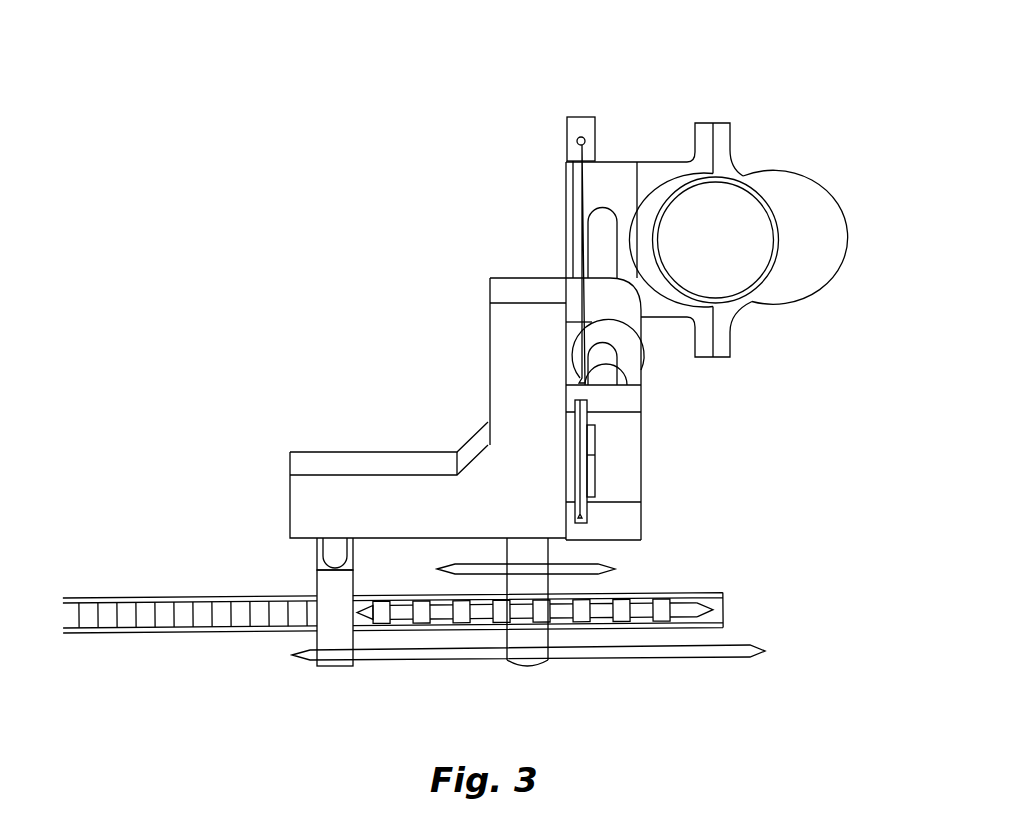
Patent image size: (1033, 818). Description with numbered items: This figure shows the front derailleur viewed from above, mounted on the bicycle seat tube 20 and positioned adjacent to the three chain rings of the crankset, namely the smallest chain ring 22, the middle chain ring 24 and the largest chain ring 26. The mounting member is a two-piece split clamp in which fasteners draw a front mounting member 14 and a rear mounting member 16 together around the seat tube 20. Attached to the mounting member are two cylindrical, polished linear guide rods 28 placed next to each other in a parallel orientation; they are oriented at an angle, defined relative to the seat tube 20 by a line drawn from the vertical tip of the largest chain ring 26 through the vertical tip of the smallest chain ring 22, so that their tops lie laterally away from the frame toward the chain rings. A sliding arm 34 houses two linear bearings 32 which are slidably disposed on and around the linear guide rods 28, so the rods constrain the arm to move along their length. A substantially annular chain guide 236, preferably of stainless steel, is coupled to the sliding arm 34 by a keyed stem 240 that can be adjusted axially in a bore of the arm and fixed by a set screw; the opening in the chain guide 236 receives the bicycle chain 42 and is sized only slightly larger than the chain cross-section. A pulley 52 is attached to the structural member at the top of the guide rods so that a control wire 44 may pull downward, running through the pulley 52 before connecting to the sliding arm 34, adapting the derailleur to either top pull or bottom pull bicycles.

The front mounting member 14 is at (720, 137).
The rear mounting member 16 is at (668, 172).
The seat tube 20 is at (765, 203).
The smallest chain ring 22 is at (610, 568).
The chain ring 24 is at (720, 611).
The largest chain ring 26 is at (680, 657).
The linear guide rods 28 is at (598, 233).
The linear bearings 32 is at (623, 357).
The sliding arm 34 is at (634, 325).
The bicycle chain 42 is at (143, 610).
The control wire 44 is at (568, 153).
The pulley 52 is at (590, 513).
The annular chain guide 236 is at (330, 641).
The stem 240 is at (333, 553).